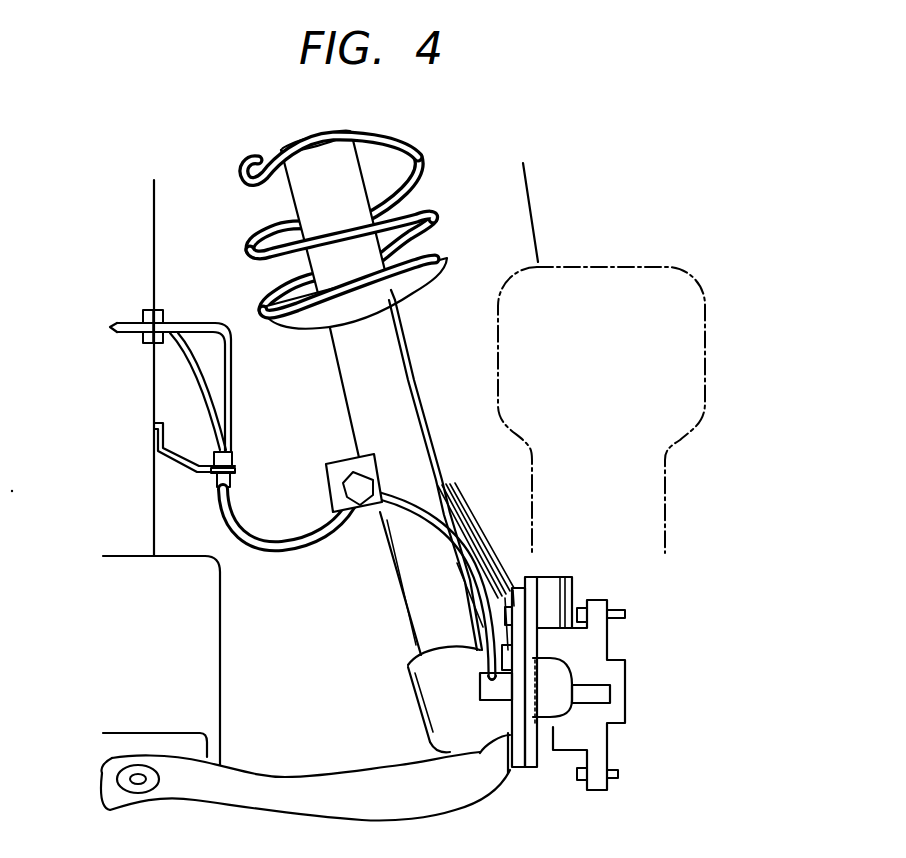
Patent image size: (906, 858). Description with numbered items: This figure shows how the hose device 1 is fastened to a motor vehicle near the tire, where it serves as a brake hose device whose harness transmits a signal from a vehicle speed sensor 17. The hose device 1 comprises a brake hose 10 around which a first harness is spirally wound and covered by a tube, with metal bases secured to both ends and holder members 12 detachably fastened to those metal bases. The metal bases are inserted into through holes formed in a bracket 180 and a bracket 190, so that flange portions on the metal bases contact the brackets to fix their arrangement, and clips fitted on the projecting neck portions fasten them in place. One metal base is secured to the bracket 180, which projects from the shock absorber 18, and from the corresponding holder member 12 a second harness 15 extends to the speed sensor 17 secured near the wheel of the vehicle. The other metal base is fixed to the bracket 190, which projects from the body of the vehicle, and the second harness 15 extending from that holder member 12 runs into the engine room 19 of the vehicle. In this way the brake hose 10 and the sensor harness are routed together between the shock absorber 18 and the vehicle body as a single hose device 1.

The hose device 1 is at (305, 560).
The brake hose 10 is at (480, 537).
The holder member 12 is at (228, 483).
The second harness 15 is at (193, 360).
The speed sensor 17 is at (523, 684).
The shock absorber 18 is at (392, 350).
The engine room 19 is at (120, 222).
The bracket 180 is at (333, 458).
The bracket 190 is at (180, 469).